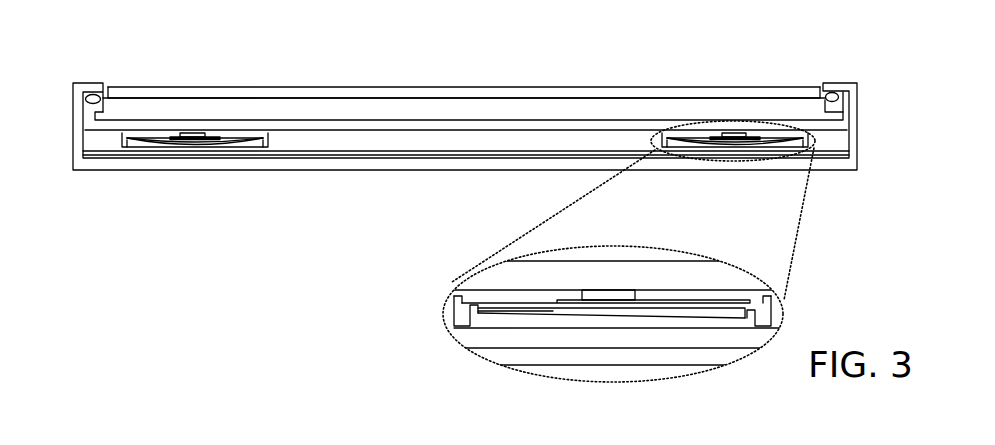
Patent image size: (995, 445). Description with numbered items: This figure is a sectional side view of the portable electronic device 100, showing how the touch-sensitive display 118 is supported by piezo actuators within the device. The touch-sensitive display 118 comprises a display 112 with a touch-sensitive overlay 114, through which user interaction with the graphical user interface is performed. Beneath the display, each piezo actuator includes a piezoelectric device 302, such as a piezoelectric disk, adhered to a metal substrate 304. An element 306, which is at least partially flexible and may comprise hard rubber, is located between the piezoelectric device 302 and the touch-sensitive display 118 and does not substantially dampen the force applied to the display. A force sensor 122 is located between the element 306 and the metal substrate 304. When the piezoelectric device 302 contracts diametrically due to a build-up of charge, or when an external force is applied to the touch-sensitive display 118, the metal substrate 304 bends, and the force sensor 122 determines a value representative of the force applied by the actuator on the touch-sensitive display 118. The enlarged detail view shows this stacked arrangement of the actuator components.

The portable electronic device 100 is at (679, 48).
The display 112 is at (370, 98).
The touch-sensitive overlay 114 is at (440, 86).
The touch-sensitive display 118 is at (188, 86).
The force sensor 122 is at (667, 303).
The piezoelectric device 302 is at (632, 318).
The metal substrate 304 is at (477, 303).
The element 306 is at (582, 290).